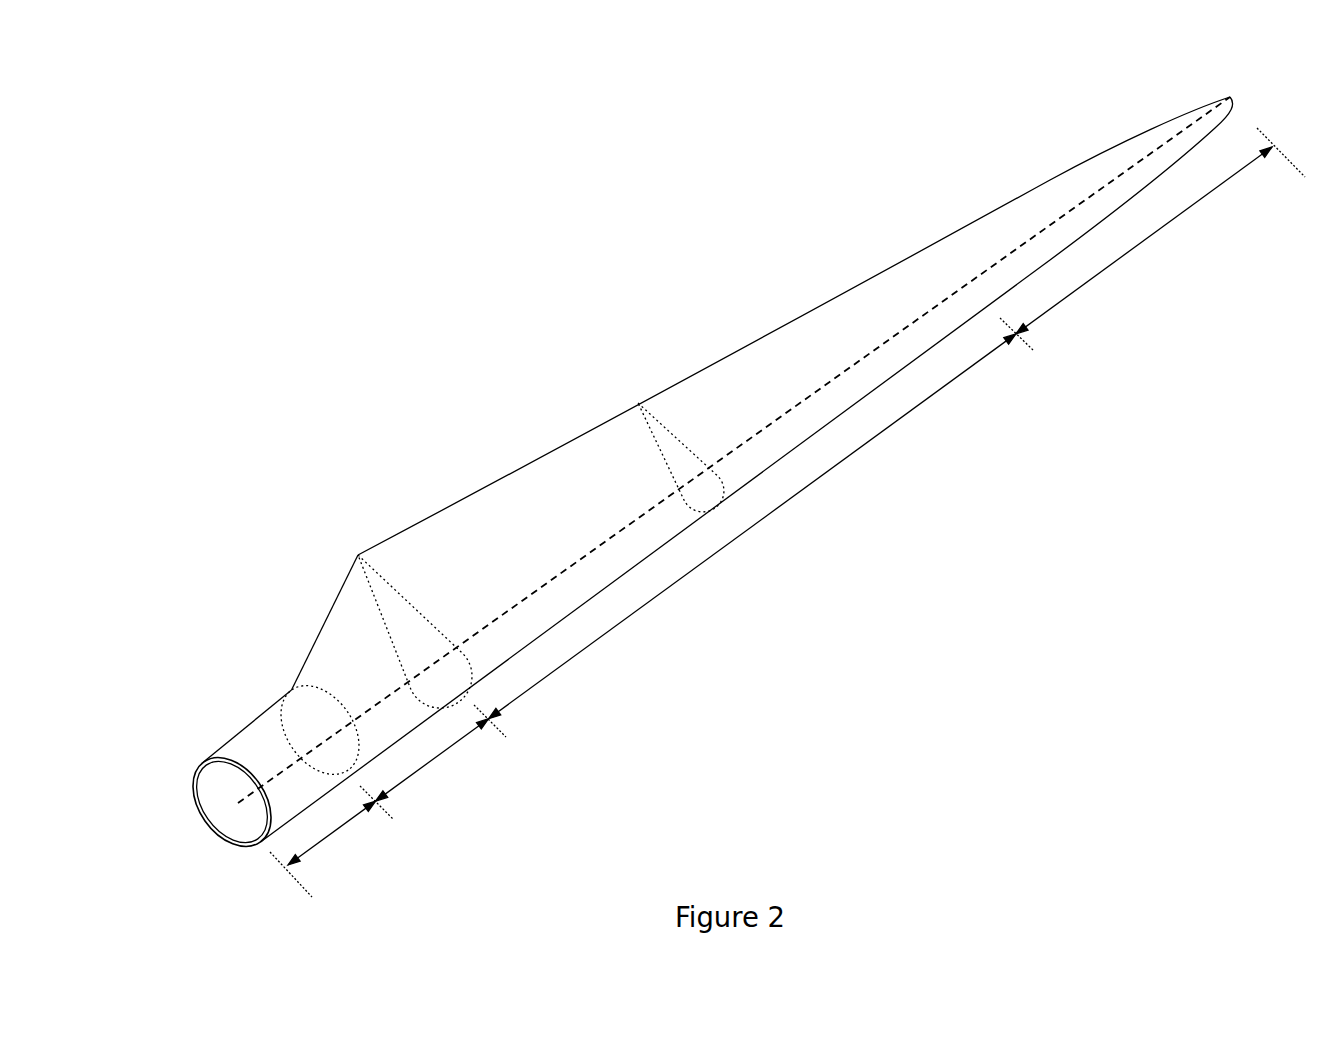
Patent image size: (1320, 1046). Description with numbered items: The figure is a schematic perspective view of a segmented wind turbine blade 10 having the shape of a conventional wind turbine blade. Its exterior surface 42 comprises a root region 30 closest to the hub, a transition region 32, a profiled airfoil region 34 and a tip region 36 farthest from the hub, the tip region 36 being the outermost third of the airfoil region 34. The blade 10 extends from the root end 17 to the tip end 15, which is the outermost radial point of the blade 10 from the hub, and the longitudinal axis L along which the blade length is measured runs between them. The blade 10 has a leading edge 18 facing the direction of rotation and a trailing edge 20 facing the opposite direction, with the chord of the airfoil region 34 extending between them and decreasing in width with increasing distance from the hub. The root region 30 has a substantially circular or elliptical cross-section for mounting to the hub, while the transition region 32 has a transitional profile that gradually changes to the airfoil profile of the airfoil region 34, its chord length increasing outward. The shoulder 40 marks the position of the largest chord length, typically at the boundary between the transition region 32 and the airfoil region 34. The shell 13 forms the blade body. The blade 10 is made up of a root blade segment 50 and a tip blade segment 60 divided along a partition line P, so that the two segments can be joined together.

The wind turbine blade 10 is at (526, 333).
The shell 13 is at (338, 644).
The tip end 15 is at (1230, 96).
The root end 17 is at (215, 770).
The leading edge 18 is at (918, 353).
The trailing edge 20 is at (802, 315).
The root region 30 is at (333, 833).
The transition region 32 is at (435, 758).
The airfoil region 34 is at (802, 492).
The tip region 36 is at (1122, 255).
The shoulder 40 is at (358, 555).
The exterior surface 42 is at (640, 547).
The root blade segment 50 is at (695, 367).
The tip blade segment 60 is at (1003, 208).
The longitudinal axis L is at (238, 803).
The partition line P is at (948, 333).